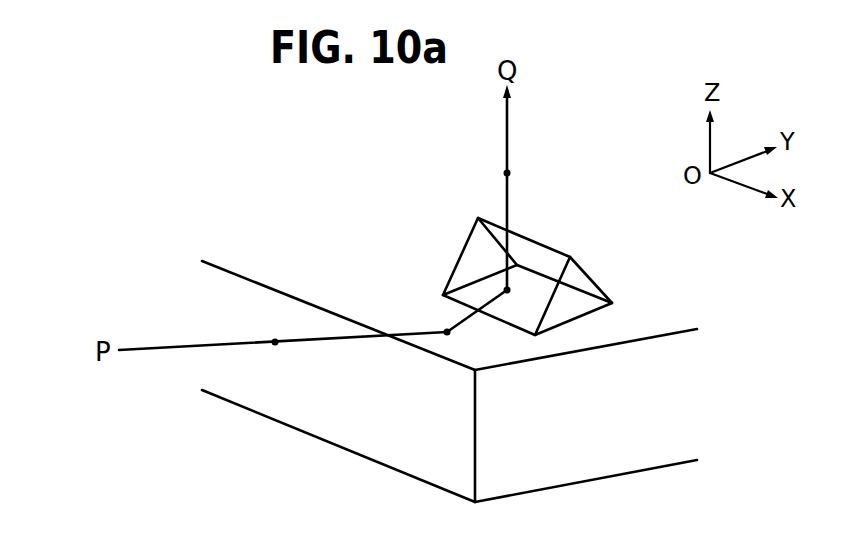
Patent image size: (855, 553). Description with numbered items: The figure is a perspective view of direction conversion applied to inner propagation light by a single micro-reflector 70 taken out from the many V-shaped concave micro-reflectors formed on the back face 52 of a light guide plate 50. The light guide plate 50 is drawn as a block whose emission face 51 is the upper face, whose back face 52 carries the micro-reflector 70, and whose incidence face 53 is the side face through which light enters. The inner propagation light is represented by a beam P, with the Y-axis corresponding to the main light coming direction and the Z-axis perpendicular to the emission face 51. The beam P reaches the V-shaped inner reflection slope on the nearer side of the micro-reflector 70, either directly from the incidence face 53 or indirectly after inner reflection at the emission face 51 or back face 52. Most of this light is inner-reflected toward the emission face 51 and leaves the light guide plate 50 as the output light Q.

The light guide plate 50 is at (641, 452).
The emission face 51 is at (341, 222).
The back face 52 is at (513, 340).
The incidence face 53 is at (398, 445).
The micro-reflector 70 is at (591, 270).